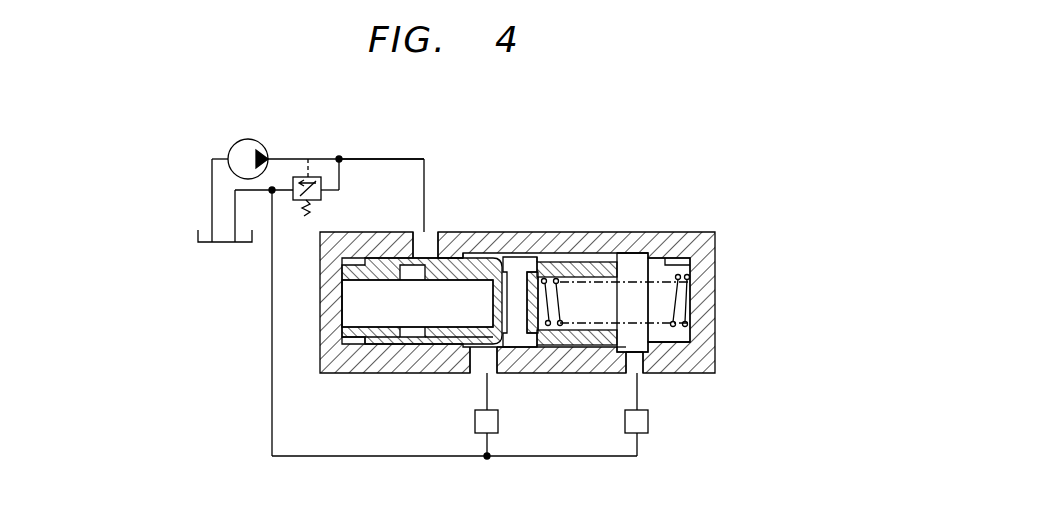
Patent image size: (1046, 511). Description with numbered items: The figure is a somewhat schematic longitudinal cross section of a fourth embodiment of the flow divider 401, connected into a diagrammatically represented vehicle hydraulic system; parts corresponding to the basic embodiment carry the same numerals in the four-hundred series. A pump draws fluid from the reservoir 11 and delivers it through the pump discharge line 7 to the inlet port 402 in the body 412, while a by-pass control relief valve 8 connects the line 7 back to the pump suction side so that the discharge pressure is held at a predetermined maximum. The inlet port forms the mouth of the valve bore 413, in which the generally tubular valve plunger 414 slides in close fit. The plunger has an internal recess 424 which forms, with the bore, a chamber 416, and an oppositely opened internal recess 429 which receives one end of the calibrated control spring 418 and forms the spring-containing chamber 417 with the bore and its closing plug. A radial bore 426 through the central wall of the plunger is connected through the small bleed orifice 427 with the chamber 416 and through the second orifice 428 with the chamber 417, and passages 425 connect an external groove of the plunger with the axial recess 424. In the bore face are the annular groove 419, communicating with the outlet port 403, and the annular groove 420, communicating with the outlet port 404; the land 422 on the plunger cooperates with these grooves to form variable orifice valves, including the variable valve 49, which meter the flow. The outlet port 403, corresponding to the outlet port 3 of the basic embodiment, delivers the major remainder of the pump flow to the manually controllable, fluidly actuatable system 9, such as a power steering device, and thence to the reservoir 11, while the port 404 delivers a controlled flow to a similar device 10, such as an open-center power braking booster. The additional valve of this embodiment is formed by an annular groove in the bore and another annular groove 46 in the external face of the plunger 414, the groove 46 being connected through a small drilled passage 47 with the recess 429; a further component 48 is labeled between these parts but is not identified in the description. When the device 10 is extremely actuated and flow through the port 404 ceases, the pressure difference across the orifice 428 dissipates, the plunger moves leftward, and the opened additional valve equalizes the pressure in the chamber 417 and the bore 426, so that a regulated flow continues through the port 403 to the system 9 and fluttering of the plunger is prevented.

The outlet port 3 is at (250, 140).
The pump discharge line 7 is at (370, 159).
The by-pass control relief valve 8 is at (297, 202).
The manually controllable and fluidly actuatable system 9 is at (475, 421).
The similar device 10 is at (648, 416).
The reservoir 11 is at (206, 238).
The annular groove 46 is at (547, 258).
The small drilled passage 47 is at (562, 346).
The spring sleeve 48 is at (540, 258).
The variable valve 49 is at (500, 348).
The flow divider 401 is at (714, 212).
The inlet port 402 is at (418, 232).
The outlet port 403 is at (480, 371).
The outlet port 404 is at (632, 362).
The body 412 is at (703, 260).
The valve bore 413 is at (700, 240).
The valve plunger 414 is at (591, 255).
The chamber 416 is at (350, 345).
The chamber 417 is at (683, 340).
The calibrated control spring 418 is at (690, 300).
The annular groove 419 is at (467, 255).
The annular groove 420 is at (633, 254).
The land 422 is at (470, 245).
The internal recess 424 is at (372, 284).
The passages 425 is at (410, 342).
The radial bore 426 is at (510, 256).
The bleed orifice 427 is at (500, 302).
The second orifice 428 is at (546, 322).
The internal recess 429 is at (640, 272).